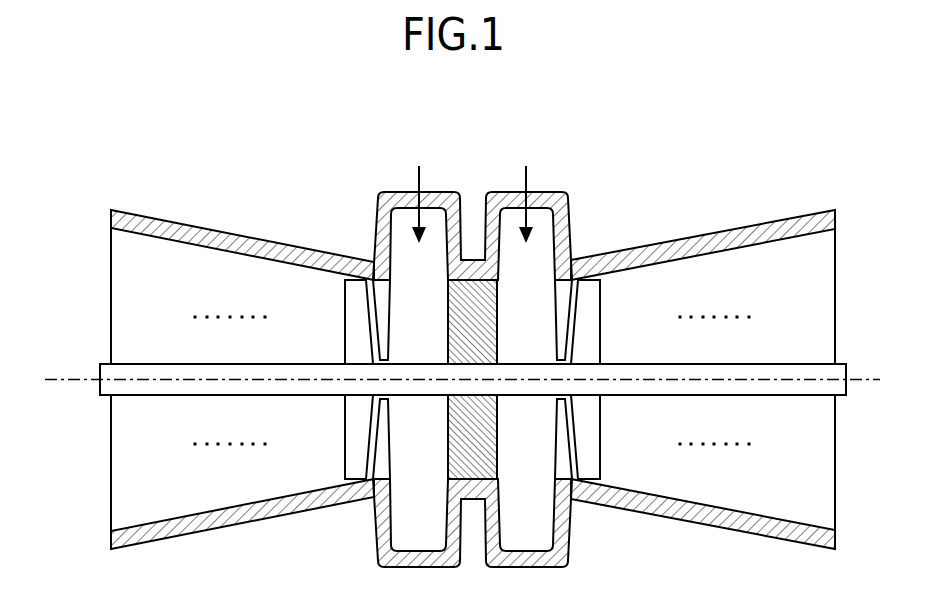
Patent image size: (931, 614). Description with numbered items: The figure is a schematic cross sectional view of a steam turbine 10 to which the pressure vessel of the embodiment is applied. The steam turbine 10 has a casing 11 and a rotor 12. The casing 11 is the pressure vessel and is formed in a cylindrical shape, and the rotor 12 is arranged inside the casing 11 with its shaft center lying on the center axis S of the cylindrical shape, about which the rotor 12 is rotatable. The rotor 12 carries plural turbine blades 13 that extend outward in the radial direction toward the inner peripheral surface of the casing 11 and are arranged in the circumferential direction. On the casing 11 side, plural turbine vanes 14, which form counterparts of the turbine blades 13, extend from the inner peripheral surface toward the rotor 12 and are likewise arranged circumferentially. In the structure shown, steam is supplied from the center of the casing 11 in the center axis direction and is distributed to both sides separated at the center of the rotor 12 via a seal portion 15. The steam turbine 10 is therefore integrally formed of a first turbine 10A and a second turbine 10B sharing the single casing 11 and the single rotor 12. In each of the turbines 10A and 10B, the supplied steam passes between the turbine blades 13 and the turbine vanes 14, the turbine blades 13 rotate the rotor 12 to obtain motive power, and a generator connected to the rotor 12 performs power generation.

The steam turbine 10 is at (686, 146).
The first turbine 10A is at (169, 212).
The second turbine 10B is at (745, 216).
The casing 11 is at (257, 237).
The rotor 12 is at (142, 370).
The turbine blades 13 is at (358, 295).
The turbine vanes 14 is at (384, 319).
The seal portion 15 is at (473, 303).
The center axis S is at (52, 378).